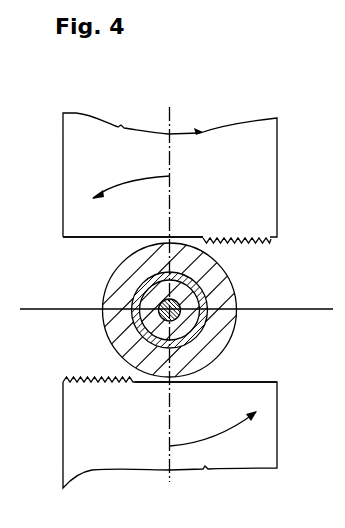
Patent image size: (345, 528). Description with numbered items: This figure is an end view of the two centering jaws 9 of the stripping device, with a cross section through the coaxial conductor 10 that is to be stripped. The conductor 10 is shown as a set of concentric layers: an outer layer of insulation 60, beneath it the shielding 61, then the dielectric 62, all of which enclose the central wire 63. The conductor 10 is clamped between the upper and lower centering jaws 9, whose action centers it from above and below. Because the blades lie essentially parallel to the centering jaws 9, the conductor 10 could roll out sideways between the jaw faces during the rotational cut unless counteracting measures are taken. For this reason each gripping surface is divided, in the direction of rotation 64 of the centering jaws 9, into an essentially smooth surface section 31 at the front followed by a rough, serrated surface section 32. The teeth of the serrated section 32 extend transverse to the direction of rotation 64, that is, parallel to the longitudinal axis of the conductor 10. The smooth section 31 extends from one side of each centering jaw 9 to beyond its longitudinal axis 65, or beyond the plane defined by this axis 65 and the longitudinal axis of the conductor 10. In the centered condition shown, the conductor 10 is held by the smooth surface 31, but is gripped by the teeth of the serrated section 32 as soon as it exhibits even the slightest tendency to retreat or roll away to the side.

The centering jaw 9 is at (225, 169).
The conductor 10 is at (247, 302).
The smooth surface section 31 is at (88, 238).
The serrated surface section 32 is at (259, 245).
The outer layer of insulation 60 is at (118, 340).
The shielding 61 is at (228, 340).
The dielectric 62 is at (155, 292).
The wire 63 is at (222, 298).
The direction of rotation 64 is at (122, 182).
The longitudinal axis of the centering jaw 65 is at (170, 110).